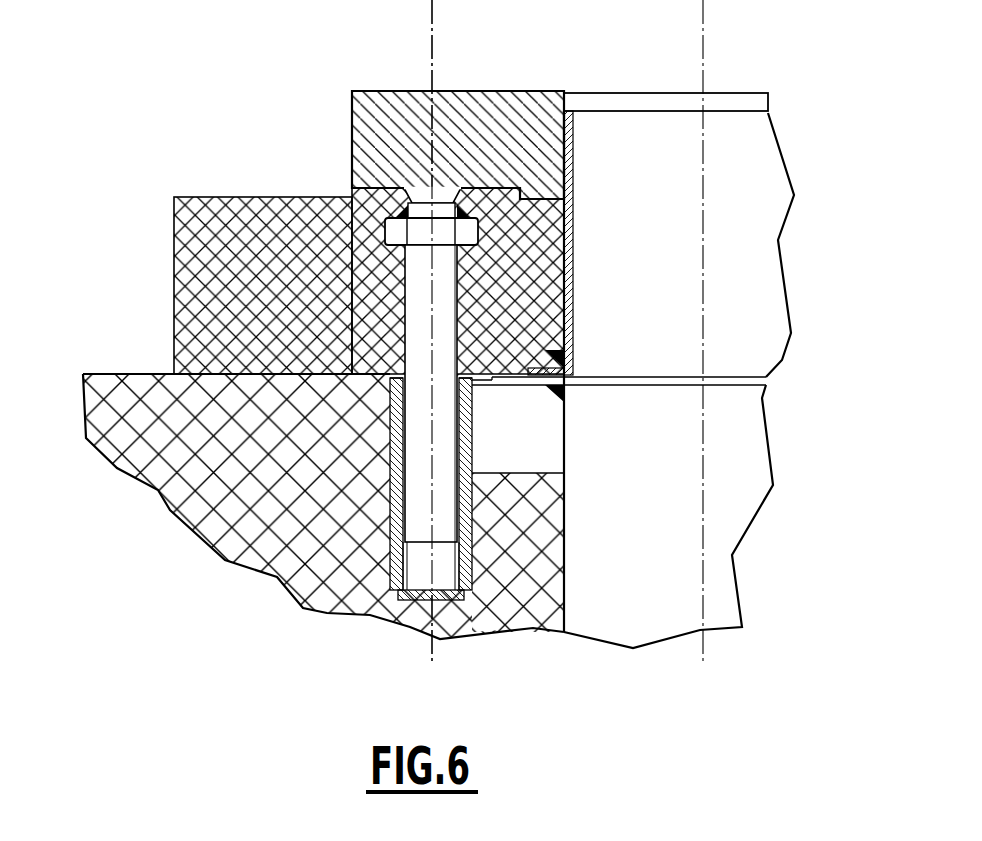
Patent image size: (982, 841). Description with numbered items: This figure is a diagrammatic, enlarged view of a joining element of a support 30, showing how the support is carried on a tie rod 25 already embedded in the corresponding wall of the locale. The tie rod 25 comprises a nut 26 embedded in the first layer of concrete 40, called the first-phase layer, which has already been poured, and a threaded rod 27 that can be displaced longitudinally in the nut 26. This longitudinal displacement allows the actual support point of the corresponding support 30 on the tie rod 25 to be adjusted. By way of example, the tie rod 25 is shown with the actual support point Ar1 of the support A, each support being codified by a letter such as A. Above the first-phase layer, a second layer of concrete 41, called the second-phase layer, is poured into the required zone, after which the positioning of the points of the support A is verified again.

The support 30 is at (370, 87).
The support A is at (483, 110).
The actual support point Ar1 is at (418, 197).
The second layer of concrete 41 is at (190, 243).
The threaded rod 27 is at (418, 328).
The tie rod 25 is at (393, 362).
The first layer of concrete 40 is at (213, 537).
The nut 26 is at (392, 545).